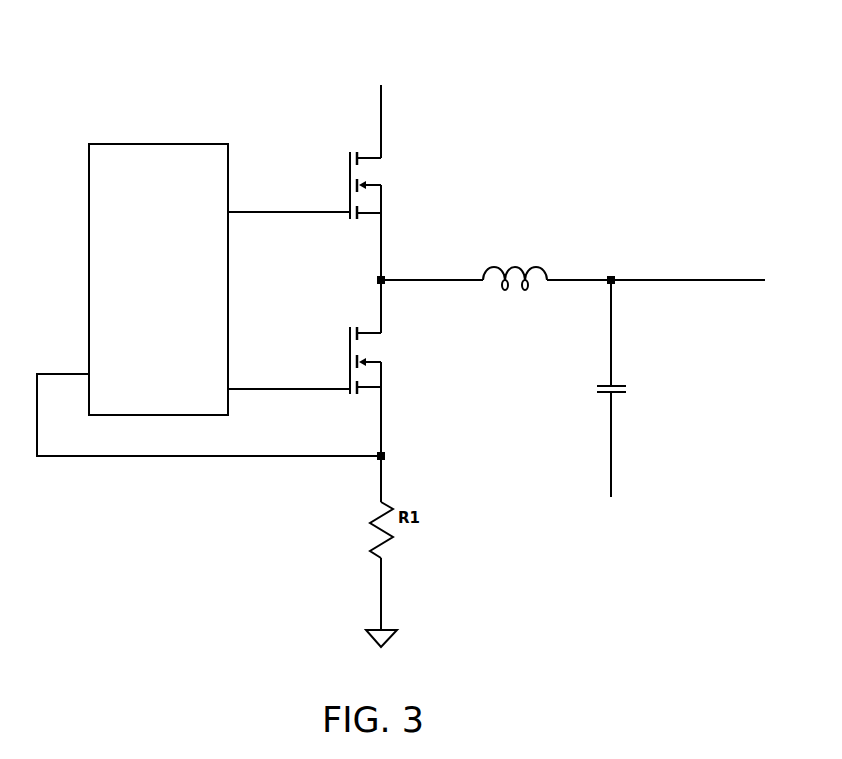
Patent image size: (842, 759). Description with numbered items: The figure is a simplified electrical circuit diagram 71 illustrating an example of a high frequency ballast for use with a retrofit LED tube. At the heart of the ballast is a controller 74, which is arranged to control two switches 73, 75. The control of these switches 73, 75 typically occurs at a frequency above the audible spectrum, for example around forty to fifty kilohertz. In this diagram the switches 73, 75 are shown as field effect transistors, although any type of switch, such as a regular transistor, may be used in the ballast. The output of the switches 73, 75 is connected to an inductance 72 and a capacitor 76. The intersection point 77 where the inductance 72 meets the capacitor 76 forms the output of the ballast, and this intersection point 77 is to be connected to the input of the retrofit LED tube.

The simplified electrical circuit diagram 71 is at (676, 98).
The inductance 72 is at (500, 245).
The switch 73 is at (356, 143).
The controller 74 is at (167, 144).
The switch 75 is at (340, 380).
The capacitor 76 is at (587, 405).
The intersection point 77 is at (748, 275).